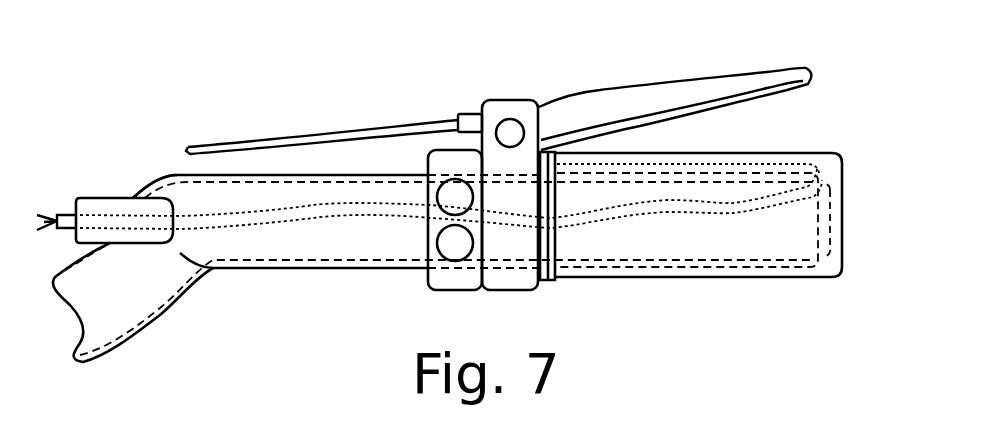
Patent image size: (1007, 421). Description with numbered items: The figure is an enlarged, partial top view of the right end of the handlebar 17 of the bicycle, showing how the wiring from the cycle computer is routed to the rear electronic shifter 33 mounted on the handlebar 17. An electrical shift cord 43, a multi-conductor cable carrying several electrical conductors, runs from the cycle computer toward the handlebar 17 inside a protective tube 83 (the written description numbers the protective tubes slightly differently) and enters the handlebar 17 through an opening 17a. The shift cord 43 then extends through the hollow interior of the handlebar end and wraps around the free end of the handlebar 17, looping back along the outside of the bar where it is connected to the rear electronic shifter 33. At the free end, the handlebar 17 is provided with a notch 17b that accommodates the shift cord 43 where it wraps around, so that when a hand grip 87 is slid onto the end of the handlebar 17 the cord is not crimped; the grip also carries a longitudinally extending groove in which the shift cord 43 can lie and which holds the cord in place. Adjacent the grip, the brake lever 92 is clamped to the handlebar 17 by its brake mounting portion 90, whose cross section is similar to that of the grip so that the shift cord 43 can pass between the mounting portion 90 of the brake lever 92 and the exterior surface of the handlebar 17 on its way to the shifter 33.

The handlebar 17 is at (258, 268).
The openings of the handlebar 17a is at (149, 198).
The notches 17b is at (822, 172).
The rear electronic shifter 33 is at (436, 289).
The electrical shift cord 43 is at (59, 213).
The cylindrical connector 83 is at (112, 198).
The outer sleeve 87 is at (697, 277).
The brake mounting portion 90 is at (523, 290).
The brake lever 92 is at (632, 84).